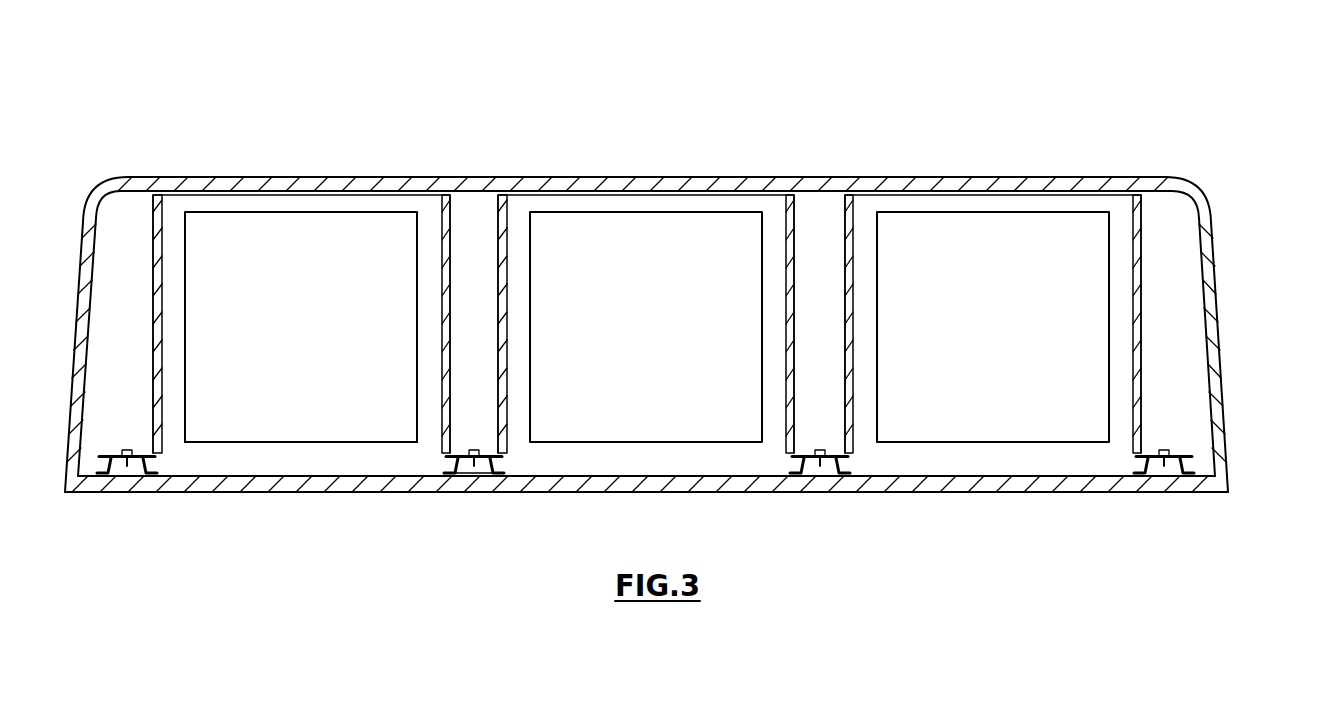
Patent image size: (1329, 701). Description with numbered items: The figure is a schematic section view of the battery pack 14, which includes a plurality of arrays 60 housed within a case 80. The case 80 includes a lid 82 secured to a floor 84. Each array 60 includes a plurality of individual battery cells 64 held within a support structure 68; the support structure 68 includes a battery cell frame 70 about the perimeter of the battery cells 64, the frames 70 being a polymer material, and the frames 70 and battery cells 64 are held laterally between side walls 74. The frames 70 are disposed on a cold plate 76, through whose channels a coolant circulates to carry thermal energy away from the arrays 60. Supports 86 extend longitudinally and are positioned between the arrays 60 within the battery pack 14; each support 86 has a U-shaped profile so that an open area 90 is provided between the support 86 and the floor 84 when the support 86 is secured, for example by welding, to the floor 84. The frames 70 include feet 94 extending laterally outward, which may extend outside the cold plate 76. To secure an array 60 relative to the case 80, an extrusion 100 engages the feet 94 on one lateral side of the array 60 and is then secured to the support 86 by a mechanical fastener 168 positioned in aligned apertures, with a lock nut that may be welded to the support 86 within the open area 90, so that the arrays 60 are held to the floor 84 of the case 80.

The battery pack 14 is at (1200, 96).
The array 60 is at (331, 196).
The side wall 74 is at (450, 212).
The battery cell 64 is at (200, 357).
The case 80 is at (1219, 274).
The lid 82 is at (1222, 332).
The foot 94 is at (160, 473).
The battery cell frame 70 is at (218, 455).
The cold plate 76 is at (255, 455).
The support structure 68 is at (349, 455).
The support 86 is at (462, 466).
The open area 90 is at (488, 485).
The extrusion 100 is at (463, 452).
The mechanical fastener 168 is at (476, 450).
The floor 84 is at (1137, 474).